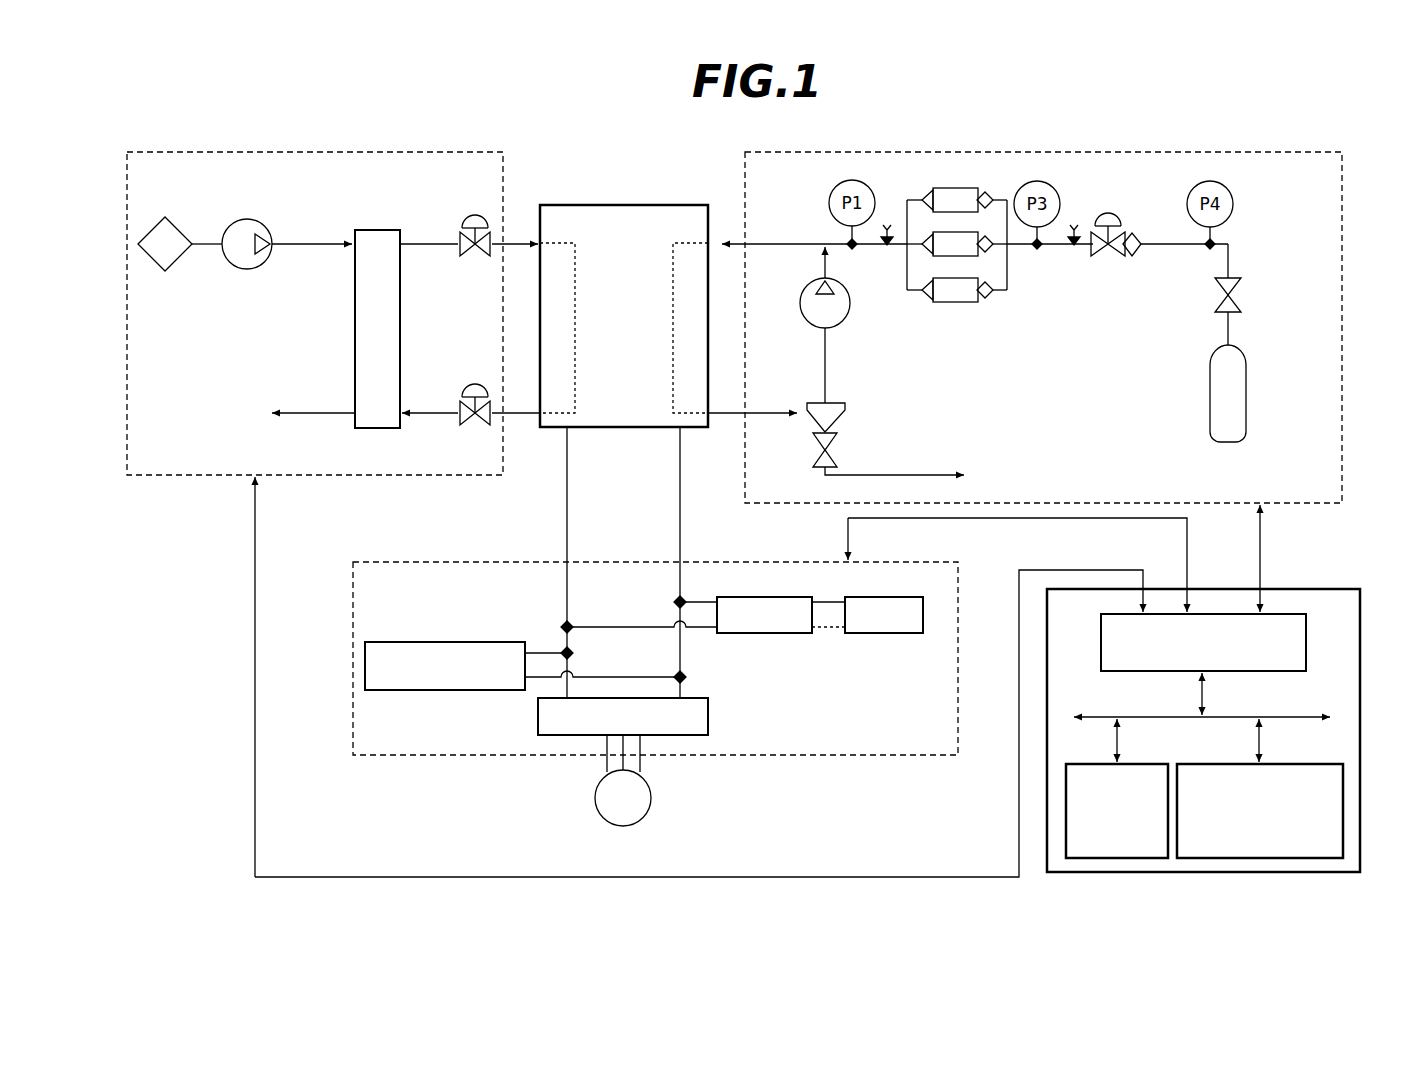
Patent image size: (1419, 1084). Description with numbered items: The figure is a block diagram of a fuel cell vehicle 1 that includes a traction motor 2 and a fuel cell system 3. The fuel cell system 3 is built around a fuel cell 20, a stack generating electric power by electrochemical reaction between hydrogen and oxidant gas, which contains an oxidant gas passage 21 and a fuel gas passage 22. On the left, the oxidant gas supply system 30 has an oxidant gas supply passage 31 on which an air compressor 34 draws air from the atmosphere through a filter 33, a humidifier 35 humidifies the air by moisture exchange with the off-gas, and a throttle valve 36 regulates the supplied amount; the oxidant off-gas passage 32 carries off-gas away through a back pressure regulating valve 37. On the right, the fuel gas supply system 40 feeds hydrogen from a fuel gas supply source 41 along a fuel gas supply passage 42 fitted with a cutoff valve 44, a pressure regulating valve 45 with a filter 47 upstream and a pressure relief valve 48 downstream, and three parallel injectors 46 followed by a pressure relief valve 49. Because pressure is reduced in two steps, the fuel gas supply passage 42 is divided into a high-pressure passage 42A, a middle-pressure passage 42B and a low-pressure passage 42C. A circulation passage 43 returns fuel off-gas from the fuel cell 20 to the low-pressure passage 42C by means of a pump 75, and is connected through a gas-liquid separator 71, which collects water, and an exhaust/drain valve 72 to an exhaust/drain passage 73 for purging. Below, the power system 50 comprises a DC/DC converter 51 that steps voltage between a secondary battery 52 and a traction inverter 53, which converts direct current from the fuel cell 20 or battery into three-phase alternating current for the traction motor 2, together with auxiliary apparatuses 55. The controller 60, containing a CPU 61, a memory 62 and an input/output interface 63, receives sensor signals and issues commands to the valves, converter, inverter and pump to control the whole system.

The fuel cell vehicle 1 is at (1362, 100).
The traction motor 2 is at (651, 790).
The fuel cell system 3 is at (1180, 134).
The fuel cell 20 is at (660, 205).
The oxidant gas passage 21 is at (558, 242).
The fuel gas passage 22 is at (672, 393).
The oxidant gas supply system 30 is at (315, 150).
The oxidant gas supply passage 31 is at (420, 243).
The oxidant off-gas passage 32 is at (425, 412).
The filter 33 is at (178, 228).
The air compressor 34 is at (245, 220).
The humidifier 35 is at (372, 230).
The throttle valve 36 is at (478, 215).
The back pressure regulating valve 37 is at (475, 384).
The fuel gas supply system 40 is at (995, 152).
The fuel gas supply source 41 is at (1247, 385).
The fuel gas supply passage 42 is at (1235, 256).
The high-pressure passage 42A is at (1177, 250).
The middle-pressure passage 42B is at (1058, 250).
The low-pressure passage 42C is at (770, 243).
The circulation passage 43 is at (828, 365).
The cutoff valve 44 is at (1240, 300).
The pressure regulating valve 45 is at (1115, 214).
The injector 46 is at (950, 186).
The filter 47 is at (1141, 236).
The pressure relief valve 48 is at (1076, 233).
The pressure relief valve 49 is at (888, 233).
The power system 50 is at (468, 558).
The DC/DC converter 51 is at (775, 634).
The secondary battery 52 is at (885, 634).
The traction inverter 53 is at (710, 715).
The auxiliary apparatuses 55 is at (472, 642).
The controller 60 is at (1312, 588).
The CPU 61 is at (1120, 860).
The memory 62 is at (1300, 763).
The input/output interface 63 is at (1308, 628).
The gas-liquid separator 71 is at (845, 405).
The exhaust/drain valve 72 is at (838, 445).
The exhaust/drain passage 73 is at (905, 472).
The pump 75 is at (851, 303).